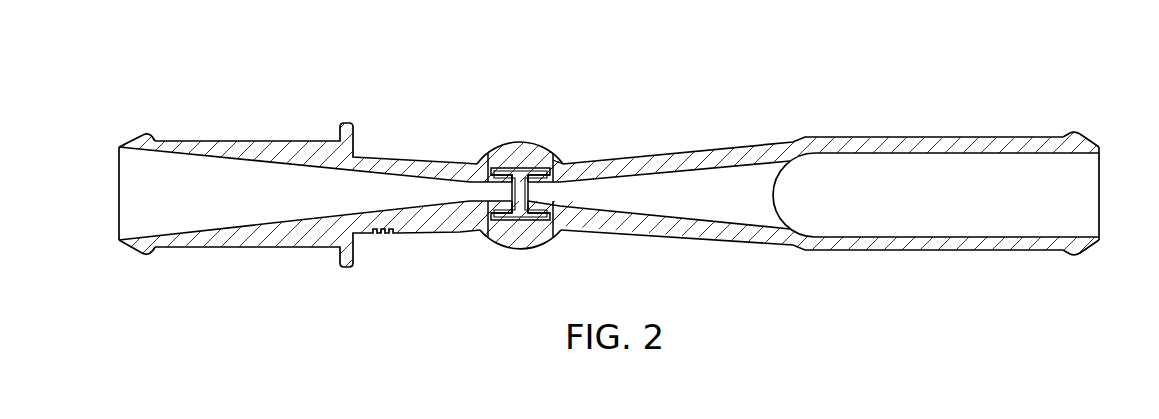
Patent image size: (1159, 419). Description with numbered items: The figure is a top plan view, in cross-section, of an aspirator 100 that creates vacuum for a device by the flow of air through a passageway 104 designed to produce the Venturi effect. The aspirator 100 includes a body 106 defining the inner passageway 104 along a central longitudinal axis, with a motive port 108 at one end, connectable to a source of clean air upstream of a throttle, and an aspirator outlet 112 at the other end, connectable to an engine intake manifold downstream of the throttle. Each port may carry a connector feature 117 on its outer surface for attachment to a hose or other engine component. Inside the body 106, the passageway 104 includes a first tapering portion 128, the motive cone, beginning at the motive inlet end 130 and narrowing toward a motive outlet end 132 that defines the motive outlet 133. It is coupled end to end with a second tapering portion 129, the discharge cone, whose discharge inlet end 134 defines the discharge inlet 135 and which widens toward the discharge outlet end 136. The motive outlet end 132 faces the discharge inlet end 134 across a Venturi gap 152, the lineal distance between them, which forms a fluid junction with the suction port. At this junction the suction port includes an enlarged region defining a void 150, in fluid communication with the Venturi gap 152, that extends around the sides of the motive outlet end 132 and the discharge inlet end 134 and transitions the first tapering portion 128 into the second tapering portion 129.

The aspirator 100 is at (441, 96).
The passageway 104 is at (283, 211).
The body 106 is at (412, 158).
The motive port 108 is at (128, 221).
The aspirator outlet 112 is at (1095, 222).
The connector feature 117 is at (147, 131).
The first tapering portion 128 is at (210, 225).
The second tapering portion 129 is at (676, 208).
The motive inlet end 130 is at (138, 172).
The motive outlet end 132 is at (493, 166).
The motive outlet 133 is at (486, 234).
The discharge inlet end 134 is at (545, 166).
The discharge inlet 135 is at (561, 230).
The discharge outlet end 136 is at (775, 222).
The void 150 is at (518, 168).
The Venturi gap 152 is at (561, 162).